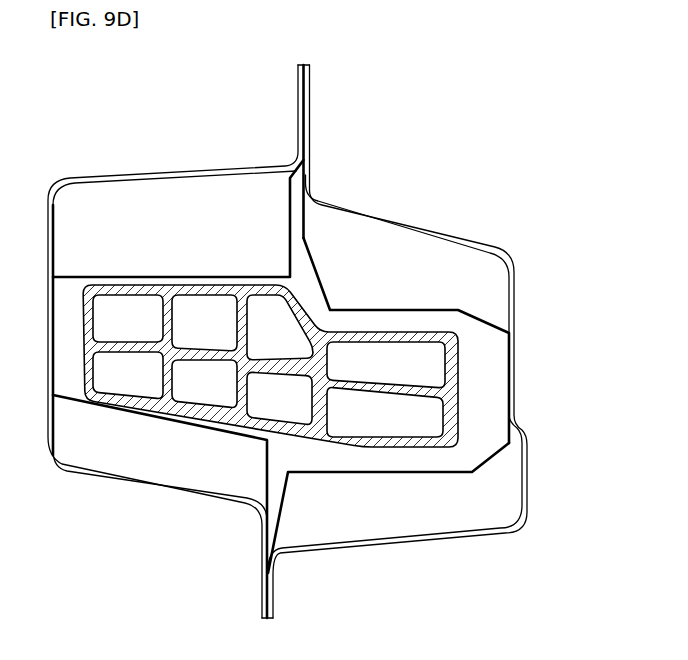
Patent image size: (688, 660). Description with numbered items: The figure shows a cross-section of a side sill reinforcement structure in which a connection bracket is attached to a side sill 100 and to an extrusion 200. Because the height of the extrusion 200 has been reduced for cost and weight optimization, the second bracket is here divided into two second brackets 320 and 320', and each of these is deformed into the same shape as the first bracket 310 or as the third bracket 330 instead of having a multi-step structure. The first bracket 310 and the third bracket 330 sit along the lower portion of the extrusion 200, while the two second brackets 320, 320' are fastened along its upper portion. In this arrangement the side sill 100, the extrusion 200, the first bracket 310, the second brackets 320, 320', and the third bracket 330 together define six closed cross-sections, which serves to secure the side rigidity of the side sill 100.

The side sill 100 is at (378, 170).
The extrusion 200 is at (450, 392).
The first bracket 310 is at (166, 420).
The second bracket 320 is at (178, 260).
The second bracket 320' is at (410, 301).
The third bracket 330 is at (281, 513).